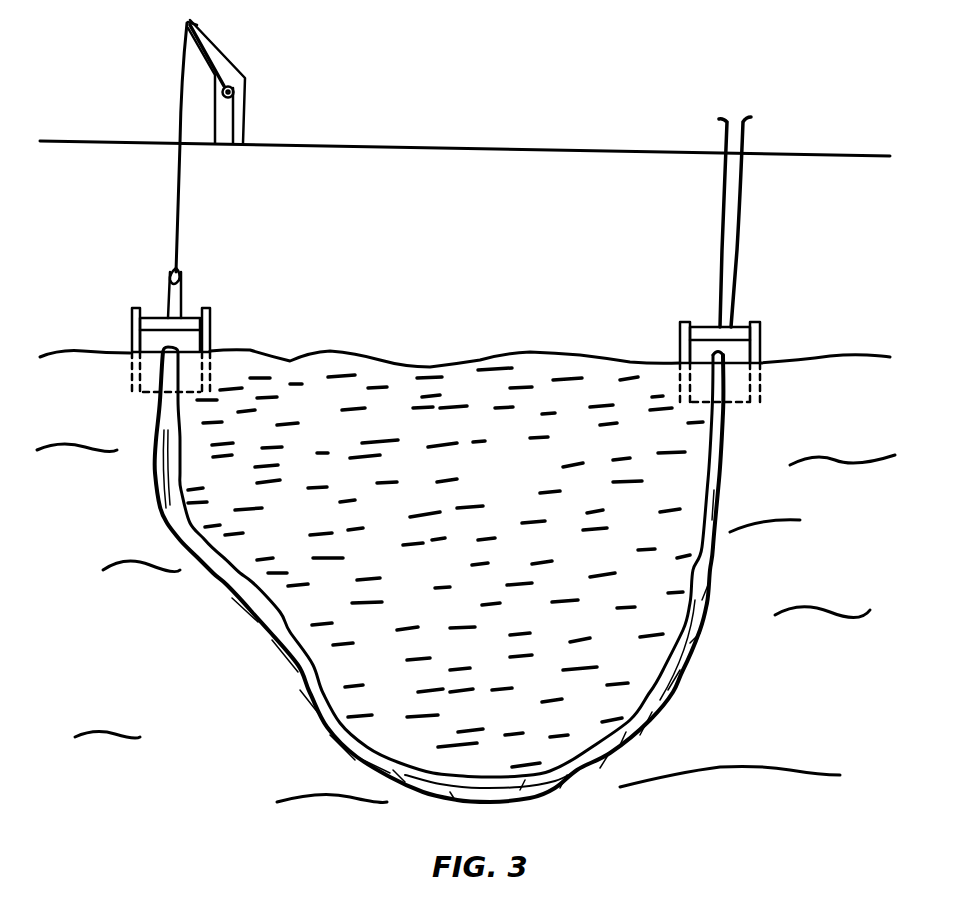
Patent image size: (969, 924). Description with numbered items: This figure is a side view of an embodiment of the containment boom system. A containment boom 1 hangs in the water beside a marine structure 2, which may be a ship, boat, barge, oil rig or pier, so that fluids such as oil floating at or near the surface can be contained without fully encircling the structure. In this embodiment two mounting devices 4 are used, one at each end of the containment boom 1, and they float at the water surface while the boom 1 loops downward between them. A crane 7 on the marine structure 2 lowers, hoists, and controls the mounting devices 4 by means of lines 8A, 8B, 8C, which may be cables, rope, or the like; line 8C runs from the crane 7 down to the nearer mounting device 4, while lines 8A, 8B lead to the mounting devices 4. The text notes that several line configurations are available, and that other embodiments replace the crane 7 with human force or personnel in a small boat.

The containment boom 1 is at (270, 629).
The marine structure 2 is at (512, 148).
The mounting device 4 is at (210, 332).
The crane 7 is at (236, 66).
The line 8A is at (163, 292).
The line 8B is at (183, 290).
The line 8C is at (178, 212).